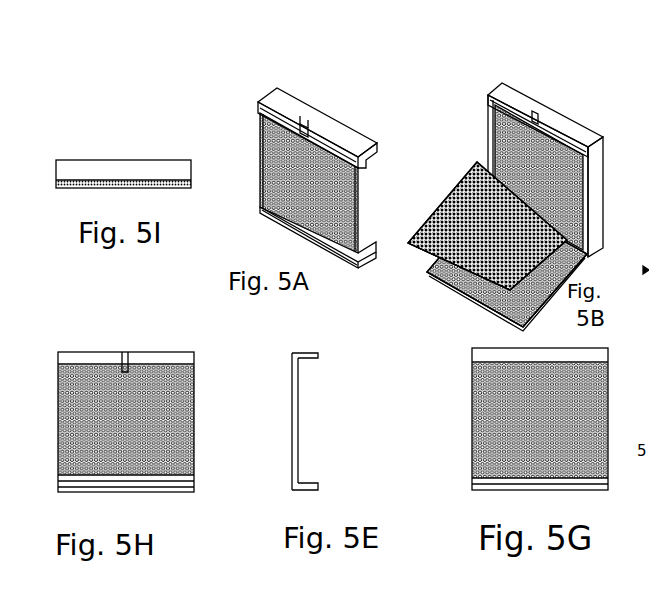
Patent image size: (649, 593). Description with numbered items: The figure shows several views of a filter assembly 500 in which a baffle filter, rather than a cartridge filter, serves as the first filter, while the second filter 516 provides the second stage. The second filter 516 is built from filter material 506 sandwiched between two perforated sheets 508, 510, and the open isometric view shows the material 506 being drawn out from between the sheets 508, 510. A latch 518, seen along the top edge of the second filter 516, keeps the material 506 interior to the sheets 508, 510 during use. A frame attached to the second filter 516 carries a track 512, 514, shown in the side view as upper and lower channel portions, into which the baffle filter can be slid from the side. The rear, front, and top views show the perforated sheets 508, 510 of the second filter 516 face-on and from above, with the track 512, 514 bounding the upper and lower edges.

In FIG. 5I, the assembly 500 is at (137, 141).
In FIG. 5B, the filter material 506 is at (480, 175).
In FIG. 5B, the perforated sheet 508 is at (482, 306).
In FIG. 5B, the perforated sheet 510 is at (512, 151).
In FIG. 5A, the track 512 is at (366, 155).
In FIG. 5E, the track 512 is at (312, 362).
In FIG. 5A, the track 514 is at (364, 252).
In FIG. 5E, the track 514 is at (310, 486).
In FIG. 5A, the second filter 516 is at (270, 229).
In FIG. 5H, the second filter 516 is at (198, 402).
In FIG. 5E, the second filter 516 is at (292, 423).
In FIG. 5G, the second filter 516 is at (468, 400).
In FIG. 5A, the latch 518 is at (306, 124).
In FIG. 5B, the latch 518 is at (538, 115).